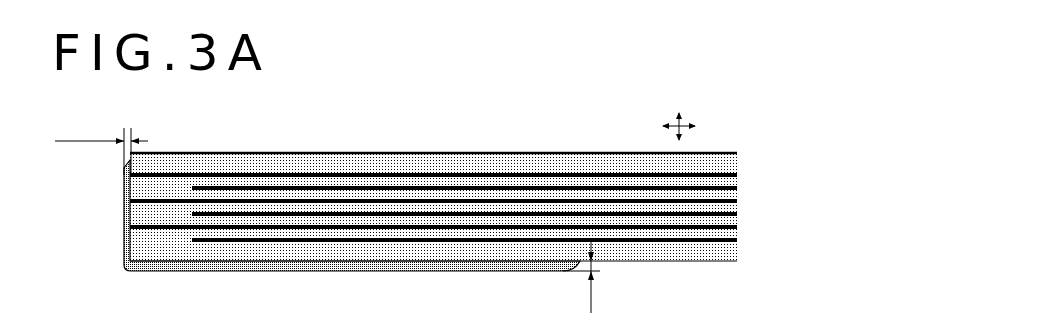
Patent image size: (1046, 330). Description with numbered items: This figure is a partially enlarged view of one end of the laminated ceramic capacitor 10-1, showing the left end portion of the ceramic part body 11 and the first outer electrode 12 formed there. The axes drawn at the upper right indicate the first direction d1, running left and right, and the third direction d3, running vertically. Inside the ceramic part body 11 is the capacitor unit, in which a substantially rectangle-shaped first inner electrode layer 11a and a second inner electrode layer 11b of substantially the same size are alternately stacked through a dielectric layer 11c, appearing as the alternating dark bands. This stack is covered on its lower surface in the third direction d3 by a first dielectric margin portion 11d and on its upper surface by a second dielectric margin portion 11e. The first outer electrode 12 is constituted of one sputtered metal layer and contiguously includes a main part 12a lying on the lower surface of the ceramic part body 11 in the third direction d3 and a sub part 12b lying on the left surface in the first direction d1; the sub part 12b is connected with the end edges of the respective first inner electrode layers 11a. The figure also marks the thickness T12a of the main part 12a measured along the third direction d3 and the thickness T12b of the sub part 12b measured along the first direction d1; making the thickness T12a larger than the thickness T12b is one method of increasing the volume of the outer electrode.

The laminated ceramic capacitor 10-1 is at (207, 153).
The ceramic part body 11 is at (432, 152).
The first inner electrode layer 11a is at (737, 176).
The second inner electrode layer 11b is at (737, 188).
The dielectric layer 11c is at (737, 214).
The first dielectric margin portion 11d is at (632, 250).
The second dielectric margin portion 11e is at (634, 160).
The first outer electrode 12 is at (122, 268).
The main part 12a is at (335, 272).
The sub part 12b is at (122, 212).
The thickness of the main part T12a is at (571, 277).
The thickness of the sub part T12b is at (101, 148).
The first direction d1 is at (690, 129).
The third direction d3 is at (680, 116).